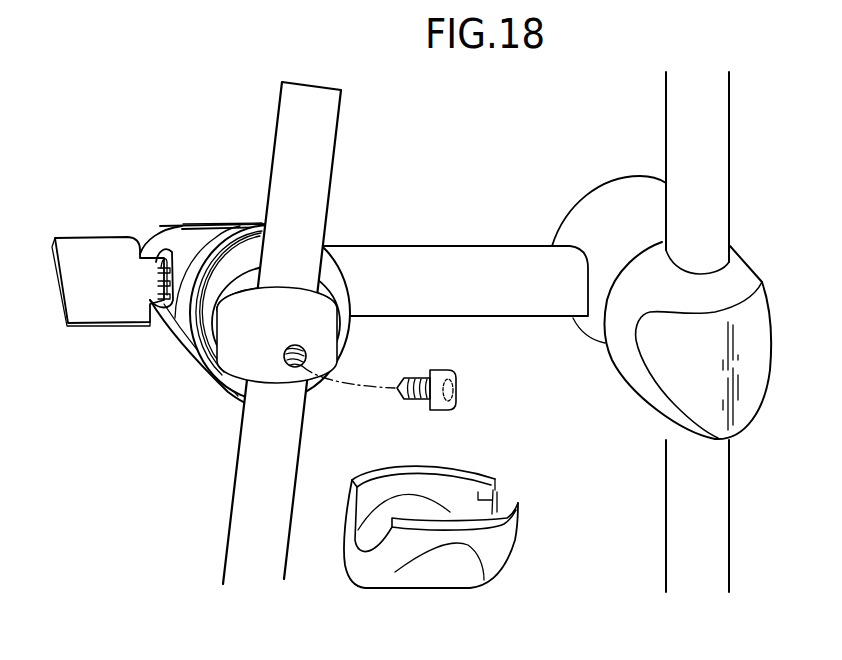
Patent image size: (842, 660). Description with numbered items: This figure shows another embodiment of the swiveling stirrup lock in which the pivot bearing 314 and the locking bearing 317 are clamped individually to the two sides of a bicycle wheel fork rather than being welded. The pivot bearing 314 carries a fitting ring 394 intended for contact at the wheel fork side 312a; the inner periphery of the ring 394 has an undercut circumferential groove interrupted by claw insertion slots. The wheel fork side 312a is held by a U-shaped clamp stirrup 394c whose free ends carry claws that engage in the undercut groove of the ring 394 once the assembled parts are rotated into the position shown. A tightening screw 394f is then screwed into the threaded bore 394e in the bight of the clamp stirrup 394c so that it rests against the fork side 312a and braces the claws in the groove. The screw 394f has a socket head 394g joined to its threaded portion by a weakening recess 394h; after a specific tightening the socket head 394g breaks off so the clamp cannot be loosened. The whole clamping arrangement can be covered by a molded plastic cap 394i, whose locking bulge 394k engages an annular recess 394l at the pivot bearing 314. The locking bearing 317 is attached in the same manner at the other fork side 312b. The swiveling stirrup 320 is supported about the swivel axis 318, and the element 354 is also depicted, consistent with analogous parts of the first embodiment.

The fork side 312a is at (330, 137).
The fork side 312b is at (672, 105).
The pivot bearing 314 is at (247, 209).
The locking bearing 317 is at (560, 203).
The swivel axis 318 is at (168, 232).
The swiveling stirrup 320 is at (422, 252).
The mounting plate 354 is at (120, 312).
The fitting ring 394 is at (228, 388).
The U-shaped clamp stirrup 394c is at (323, 333).
The threaded hole 394e is at (292, 370).
The tightening screw 394f is at (407, 402).
The socket head 394g is at (456, 400).
The weakening recess 394h is at (440, 372).
The covering cap 394i is at (476, 590).
The locking bulge 394k is at (497, 488).
The annular recess 394l is at (216, 250).